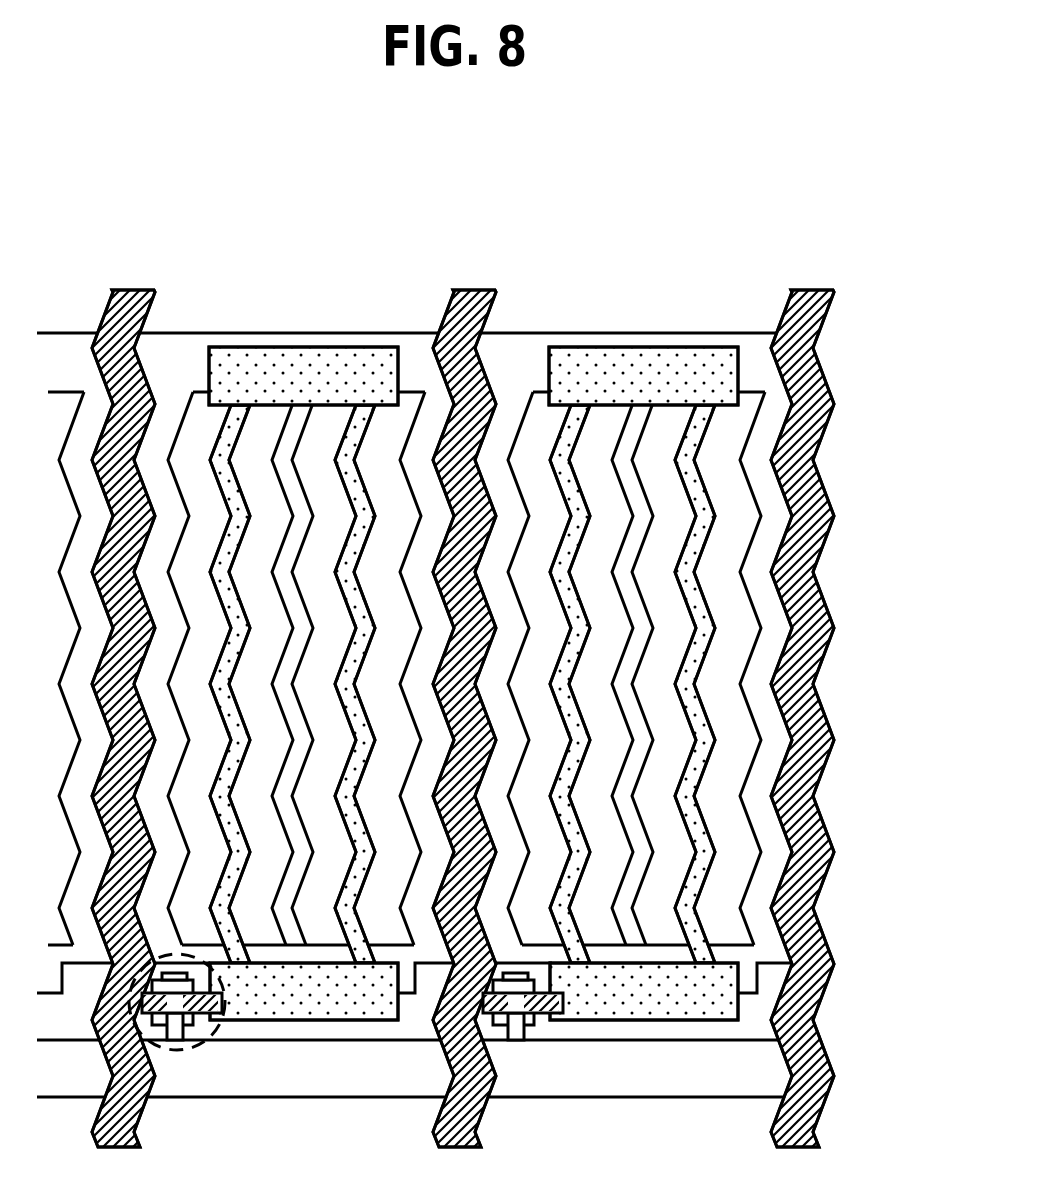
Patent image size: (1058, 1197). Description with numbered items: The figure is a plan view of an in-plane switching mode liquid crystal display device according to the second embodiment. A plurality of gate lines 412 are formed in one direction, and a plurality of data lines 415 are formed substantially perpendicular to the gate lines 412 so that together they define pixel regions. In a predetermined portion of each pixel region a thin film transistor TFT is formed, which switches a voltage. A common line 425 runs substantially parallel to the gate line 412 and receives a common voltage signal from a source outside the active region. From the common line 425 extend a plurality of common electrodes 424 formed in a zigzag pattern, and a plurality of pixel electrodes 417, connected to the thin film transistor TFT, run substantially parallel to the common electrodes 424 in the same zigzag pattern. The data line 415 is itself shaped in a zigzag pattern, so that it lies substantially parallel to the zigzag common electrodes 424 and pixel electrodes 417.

The gate line 412 is at (363, 1080).
The data line 415 is at (812, 590).
The pixel electrode 417 is at (703, 492).
The common electrode 424 is at (635, 545).
The common line 425 is at (183, 352).
The thin film transistor TFT is at (183, 1055).